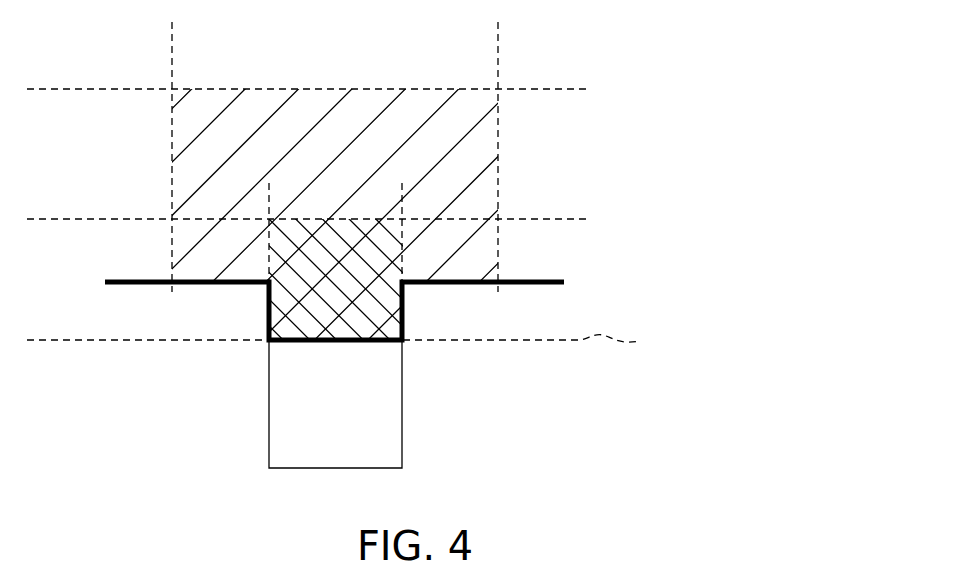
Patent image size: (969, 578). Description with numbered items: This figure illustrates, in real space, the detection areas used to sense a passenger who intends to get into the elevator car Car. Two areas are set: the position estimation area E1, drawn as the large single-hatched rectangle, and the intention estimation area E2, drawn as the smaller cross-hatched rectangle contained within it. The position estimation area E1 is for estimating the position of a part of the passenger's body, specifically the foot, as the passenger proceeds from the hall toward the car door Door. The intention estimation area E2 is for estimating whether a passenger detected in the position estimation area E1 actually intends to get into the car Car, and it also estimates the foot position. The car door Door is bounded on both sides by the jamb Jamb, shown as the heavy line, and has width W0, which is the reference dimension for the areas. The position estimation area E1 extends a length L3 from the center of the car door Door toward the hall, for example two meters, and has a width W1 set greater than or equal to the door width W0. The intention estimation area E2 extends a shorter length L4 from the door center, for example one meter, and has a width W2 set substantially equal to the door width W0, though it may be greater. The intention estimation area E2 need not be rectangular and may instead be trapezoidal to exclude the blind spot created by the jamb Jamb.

The position estimation area E1 is at (483, 125).
The intention estimation area E2 is at (380, 257).
The jamb Jamb is at (564, 282).
The car door Door is at (549, 342).
The car Car is at (335, 404).
The width of the car door W0 is at (269, 343).
The width of the position estimation area W1 is at (498, 40).
The width of the intention estimation area W2 is at (402, 201).
The length of the position estimation area L3 is at (86, 340).
The length of the intention estimation area L4 is at (59, 219).